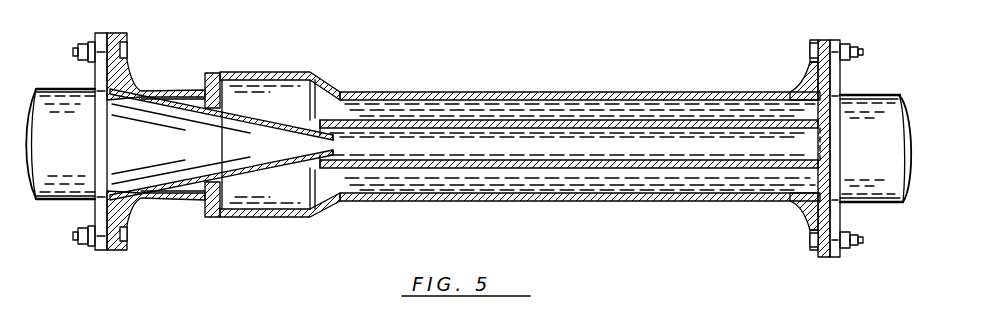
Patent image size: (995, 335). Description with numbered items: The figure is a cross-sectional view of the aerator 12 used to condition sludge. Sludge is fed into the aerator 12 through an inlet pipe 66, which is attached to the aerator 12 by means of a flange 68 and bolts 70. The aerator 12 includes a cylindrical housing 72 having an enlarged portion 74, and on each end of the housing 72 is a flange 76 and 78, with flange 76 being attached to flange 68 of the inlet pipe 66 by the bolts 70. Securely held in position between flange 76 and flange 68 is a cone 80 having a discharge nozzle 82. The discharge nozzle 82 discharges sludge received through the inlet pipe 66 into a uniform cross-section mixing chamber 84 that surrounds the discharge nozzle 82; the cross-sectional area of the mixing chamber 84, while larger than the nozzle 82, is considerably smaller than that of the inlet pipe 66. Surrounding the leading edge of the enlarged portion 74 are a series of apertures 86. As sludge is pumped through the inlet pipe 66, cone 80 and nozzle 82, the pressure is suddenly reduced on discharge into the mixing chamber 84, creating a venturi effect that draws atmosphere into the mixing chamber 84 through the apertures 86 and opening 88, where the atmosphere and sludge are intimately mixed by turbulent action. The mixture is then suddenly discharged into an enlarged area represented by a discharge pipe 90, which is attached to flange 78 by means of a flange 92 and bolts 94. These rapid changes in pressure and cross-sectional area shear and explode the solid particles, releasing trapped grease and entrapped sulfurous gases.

The aerator 12 is at (593, 70).
The inlet pipe 66 is at (72, 157).
The flange 68 is at (100, 33).
The bolts 70 is at (128, 46).
The cylindrical housing 72 is at (493, 92).
The enlarged portion 74 is at (297, 72).
The flange 76 is at (112, 33).
The flange 78 is at (822, 40).
The cone 80 is at (167, 157).
The discharge nozzle 82 is at (334, 145).
The mixing chamber 84 is at (403, 168).
The apertures 86 is at (217, 108).
The opening 88 is at (313, 130).
The discharge pipe 90 is at (885, 157).
The flange 92 is at (834, 40).
The bolts 94 is at (863, 52).